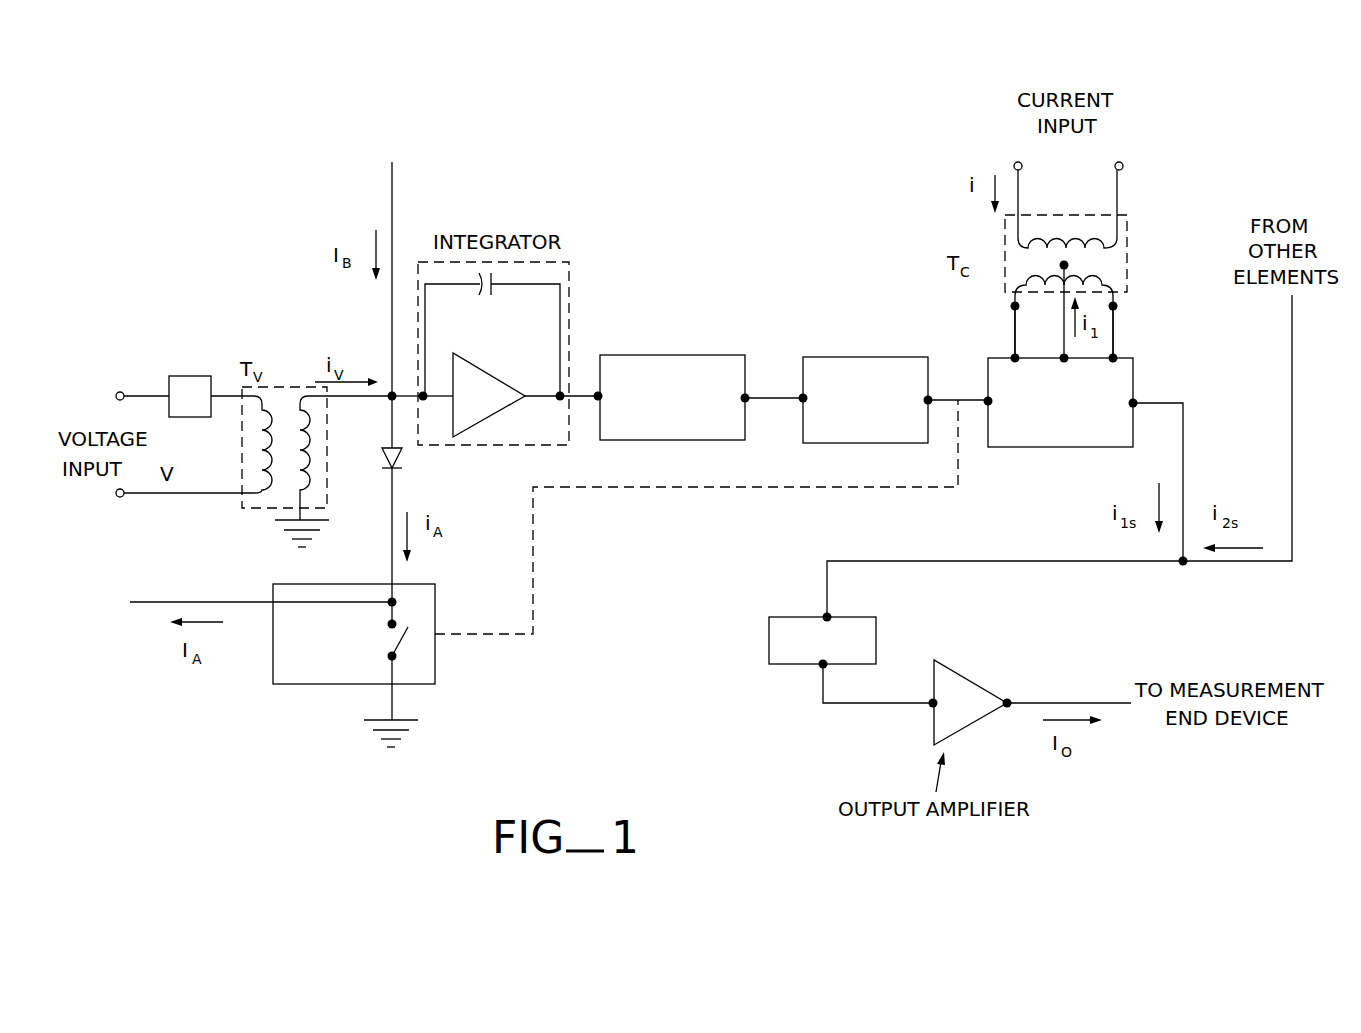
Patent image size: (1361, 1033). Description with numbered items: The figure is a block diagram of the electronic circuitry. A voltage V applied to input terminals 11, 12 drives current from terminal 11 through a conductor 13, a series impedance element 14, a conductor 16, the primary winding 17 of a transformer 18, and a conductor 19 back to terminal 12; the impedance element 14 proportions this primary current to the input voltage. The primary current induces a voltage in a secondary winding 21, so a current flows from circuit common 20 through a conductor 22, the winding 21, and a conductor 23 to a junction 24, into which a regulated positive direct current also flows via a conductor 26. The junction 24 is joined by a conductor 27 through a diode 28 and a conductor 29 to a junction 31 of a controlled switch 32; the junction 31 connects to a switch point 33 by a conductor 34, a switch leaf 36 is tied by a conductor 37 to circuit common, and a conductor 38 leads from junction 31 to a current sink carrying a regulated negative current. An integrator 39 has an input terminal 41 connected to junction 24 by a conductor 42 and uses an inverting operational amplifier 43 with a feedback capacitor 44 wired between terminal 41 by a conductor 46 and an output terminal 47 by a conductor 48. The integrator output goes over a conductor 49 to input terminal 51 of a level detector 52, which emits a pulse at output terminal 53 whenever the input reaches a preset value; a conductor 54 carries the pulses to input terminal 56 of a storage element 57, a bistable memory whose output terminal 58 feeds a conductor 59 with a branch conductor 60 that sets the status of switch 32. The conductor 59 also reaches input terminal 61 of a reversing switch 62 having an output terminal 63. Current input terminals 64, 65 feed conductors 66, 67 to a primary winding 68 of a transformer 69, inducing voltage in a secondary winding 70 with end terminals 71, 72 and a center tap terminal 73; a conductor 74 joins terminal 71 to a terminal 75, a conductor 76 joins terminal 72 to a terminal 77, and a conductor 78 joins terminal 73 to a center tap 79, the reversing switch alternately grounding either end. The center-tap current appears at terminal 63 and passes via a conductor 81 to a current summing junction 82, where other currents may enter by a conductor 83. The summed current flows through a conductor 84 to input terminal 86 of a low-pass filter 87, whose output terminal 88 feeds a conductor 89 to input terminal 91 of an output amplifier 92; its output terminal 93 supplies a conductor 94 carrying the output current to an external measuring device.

The input terminal 11 is at (117, 390).
The input terminal 12 is at (118, 497).
The conductor 13 is at (148, 392).
The series impedance element 14 is at (188, 375).
The conductor 16 is at (236, 400).
The primary winding 17 is at (262, 452).
The transformer 18 is at (285, 385).
The conductor 19 is at (200, 496).
The circuit common 20 is at (290, 535).
The secondary winding 21 is at (312, 440).
The conductor 22 is at (318, 522).
The conductor 23 is at (348, 400).
The junction 24 is at (391, 392).
The conductor 26 is at (396, 180).
The conductor 27 is at (390, 436).
The diode 28 is at (397, 461).
The conductor 29 is at (390, 530).
The junction 31 is at (396, 600).
The controlled switch 32 is at (294, 686).
The switch point 33 is at (388, 624).
The conductor 34 is at (400, 606).
The switch leaf 36 is at (409, 653).
The conductor 37 is at (396, 703).
The conductor 38 is at (156, 600).
The integrator 39 is at (570, 275).
The input terminal 41 is at (424, 392).
The conductor 42 is at (393, 392).
The inverting operational amplifier 43 is at (489, 420).
The feedback capacitor 44 is at (487, 297).
The conductor 46 is at (427, 322).
The output terminal 47 is at (556, 390).
The conductor 48 is at (558, 328).
The conductor 49 is at (580, 405).
The input terminal 51 is at (598, 390).
The level detector 52 is at (660, 356).
The output terminal 53 is at (748, 394).
The conductor 54 is at (785, 402).
The input terminal 56 is at (803, 393).
The storage element 57 is at (862, 357).
The output terminal 58 is at (931, 395).
The conductor 59 is at (968, 398).
The branch conductor 60 is at (760, 490).
The input terminal 61 is at (986, 406).
The reversing switch 62 is at (1070, 448).
The output terminal 63 is at (1137, 401).
The current input terminal 64 is at (1015, 161).
The current input terminal 65 is at (1121, 162).
The conductor 66 is at (1020, 201).
The conductor 67 is at (1119, 199).
The primary winding 68 is at (1063, 228).
The transformer 69 is at (1128, 226).
The secondary winding 70 is at (1125, 279).
The end terminal 71 is at (1011, 306).
The end terminal 72 is at (1117, 306).
The center tap terminal 73 is at (1067, 263).
The conductor 74 is at (1013, 340).
The terminal 75 is at (1017, 356).
The conductor 76 is at (1115, 330).
The terminal 77 is at (1117, 358).
The conductor 78 is at (1061, 322).
The center tap 79 is at (1061, 357).
The conductor 81 is at (1185, 446).
The current summing junction 82 is at (1180, 564).
The conductor 83 is at (1294, 449).
The conductor 84 is at (1031, 559).
The input terminal 86 is at (824, 614).
The low-pass filter 87 is at (868, 616).
The output terminal 88 is at (818, 669).
The conductor 89 is at (848, 705).
The input terminal 91 is at (930, 708).
The output amplifier 92 is at (968, 676).
The output terminal 93 is at (1012, 698).
The conductor 94 is at (1076, 700).